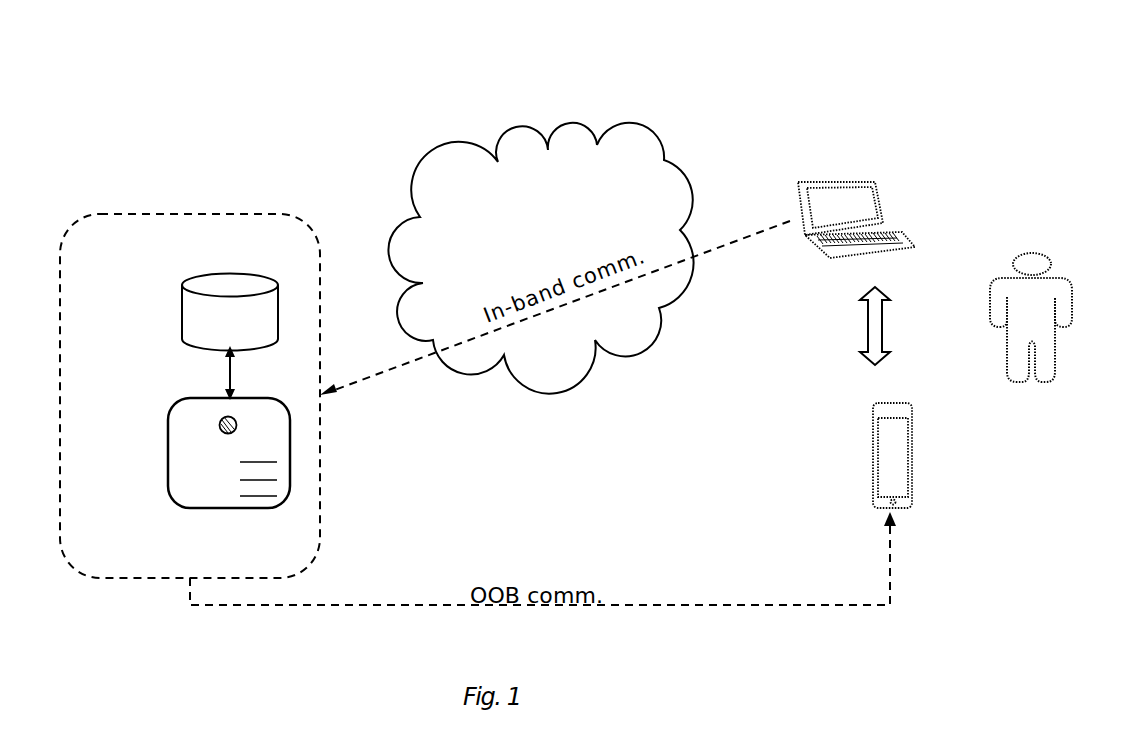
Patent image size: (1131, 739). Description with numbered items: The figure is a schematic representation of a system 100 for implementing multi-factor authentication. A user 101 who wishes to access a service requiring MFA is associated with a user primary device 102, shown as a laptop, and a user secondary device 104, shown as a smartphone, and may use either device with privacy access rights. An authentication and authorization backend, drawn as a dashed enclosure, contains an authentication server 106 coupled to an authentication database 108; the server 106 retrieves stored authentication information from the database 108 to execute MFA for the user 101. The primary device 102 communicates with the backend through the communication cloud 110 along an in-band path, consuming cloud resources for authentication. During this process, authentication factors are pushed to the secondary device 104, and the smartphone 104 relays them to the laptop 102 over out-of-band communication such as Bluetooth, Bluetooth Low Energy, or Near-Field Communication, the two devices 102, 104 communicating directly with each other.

The system 100 is at (152, 78).
The user 101 is at (1052, 317).
The user primary device 102 is at (935, 226).
The user secondary device 104 is at (950, 513).
The authentication server 106 is at (156, 490).
The authentication database 108 is at (230, 337).
The communication cloud 110 is at (95, 620).